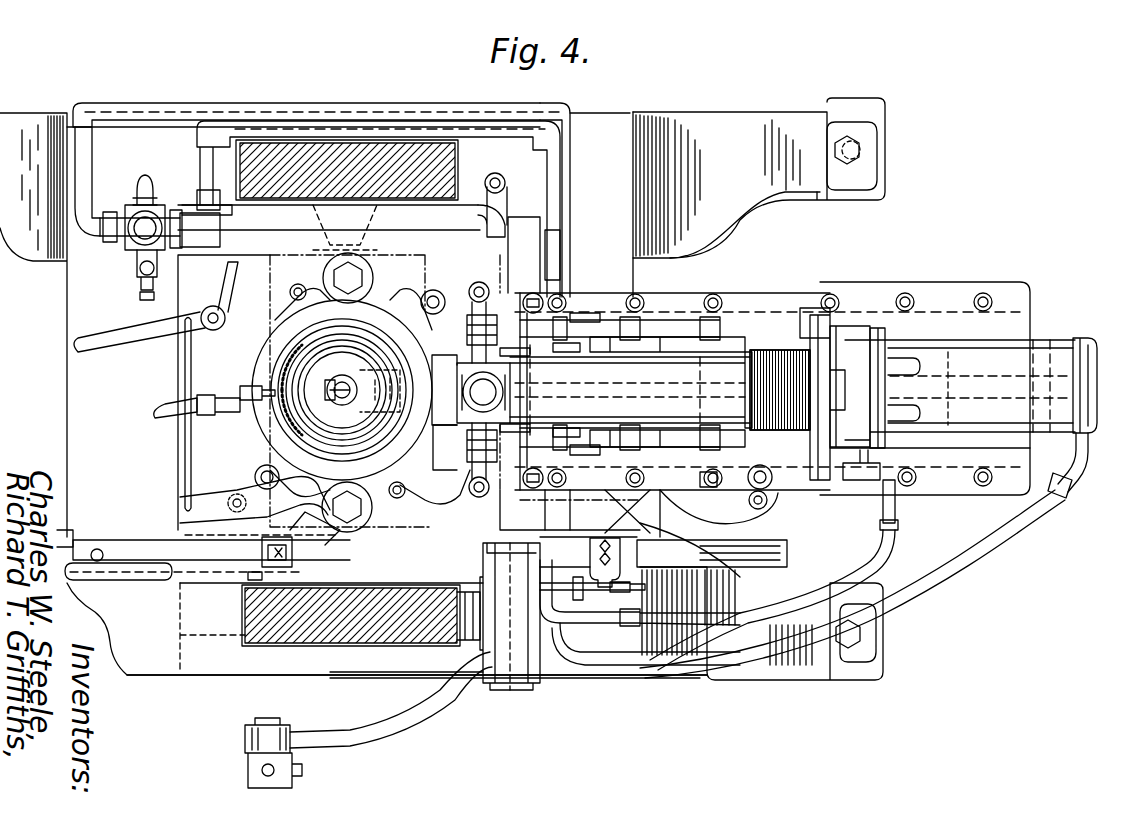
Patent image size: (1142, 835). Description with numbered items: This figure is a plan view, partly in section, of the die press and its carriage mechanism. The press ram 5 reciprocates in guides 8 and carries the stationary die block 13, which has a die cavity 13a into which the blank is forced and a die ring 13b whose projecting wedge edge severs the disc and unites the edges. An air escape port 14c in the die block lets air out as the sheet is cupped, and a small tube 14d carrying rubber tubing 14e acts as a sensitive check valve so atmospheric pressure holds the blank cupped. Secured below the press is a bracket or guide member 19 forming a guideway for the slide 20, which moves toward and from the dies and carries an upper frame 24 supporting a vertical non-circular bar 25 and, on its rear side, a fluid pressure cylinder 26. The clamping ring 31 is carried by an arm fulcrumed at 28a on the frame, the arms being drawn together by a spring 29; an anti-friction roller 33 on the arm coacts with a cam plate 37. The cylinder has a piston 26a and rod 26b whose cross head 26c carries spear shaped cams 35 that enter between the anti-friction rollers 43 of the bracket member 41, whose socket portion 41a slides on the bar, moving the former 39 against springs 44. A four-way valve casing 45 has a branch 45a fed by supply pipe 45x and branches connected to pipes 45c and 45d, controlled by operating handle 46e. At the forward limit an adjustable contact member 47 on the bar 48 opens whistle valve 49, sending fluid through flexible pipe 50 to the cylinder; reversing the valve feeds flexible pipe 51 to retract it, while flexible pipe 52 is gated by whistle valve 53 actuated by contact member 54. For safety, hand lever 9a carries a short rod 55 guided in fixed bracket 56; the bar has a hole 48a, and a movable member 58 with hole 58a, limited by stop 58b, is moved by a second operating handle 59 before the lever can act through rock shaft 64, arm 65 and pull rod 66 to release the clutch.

The ram 5 is at (272, 269).
The guides 8 is at (330, 212).
The hand lever 9a is at (118, 575).
The stationary die block 13 is at (262, 428).
The die cavity 13a is at (290, 356).
The die ring 13b is at (305, 445).
The air escape port 14c is at (258, 406).
The small tube 14d is at (244, 386).
The rubber tubing 14e is at (197, 407).
The bracket or guide member 19 is at (945, 489).
The slide 20 is at (952, 440).
The upper frame 24 is at (712, 335).
The vertical non-circular bar 25 is at (428, 470).
The fluid pressure cylinder 26 is at (1035, 365).
The piston 26a is at (1072, 346).
The piston rod 26b is at (950, 378).
The cross head 26c is at (750, 347).
The fulcrum 28a is at (822, 320).
The spring 29 is at (532, 298).
The clamping ring 31 is at (295, 342).
The anti-friction roller 33 is at (590, 305).
The spear shaped cams 35 is at (557, 346).
The cam plate 37 is at (650, 328).
The former or plunger 39 is at (365, 370).
The bracket arm or member 41 is at (468, 393).
The socket portion 41a is at (460, 372).
The anti-friction rollers 43 is at (488, 292).
The springs 44 is at (470, 282).
The four-way valve casing 45 is at (140, 243).
The supply branch 45a is at (136, 288).
The pipe 45c is at (205, 167).
The pipe 45d is at (161, 110).
The supply pipe 45x is at (240, 230).
The operating handle 46e is at (140, 300).
The adjustable contact member 47 is at (640, 582).
The bar 48 is at (133, 547).
The hole 48a is at (97, 548).
The whistle valve 49 is at (646, 644).
The flexible pipe 50 is at (432, 300).
The flexible pipe 51 is at (853, 585).
The flexible pipe 52 is at (768, 506).
The whistle valve 53 is at (795, 492).
The adjustable contact member 54 is at (719, 498).
The short rod 55 is at (195, 530).
The fixed bracket 56 is at (230, 537).
The movable member 58 is at (215, 503).
The hole 58a is at (315, 516).
The stop 58b is at (245, 588).
The second operating handle 59 is at (156, 317).
The rock shaft 64 is at (520, 686).
The arm 65 is at (408, 722).
The pull rod 66 is at (248, 765).